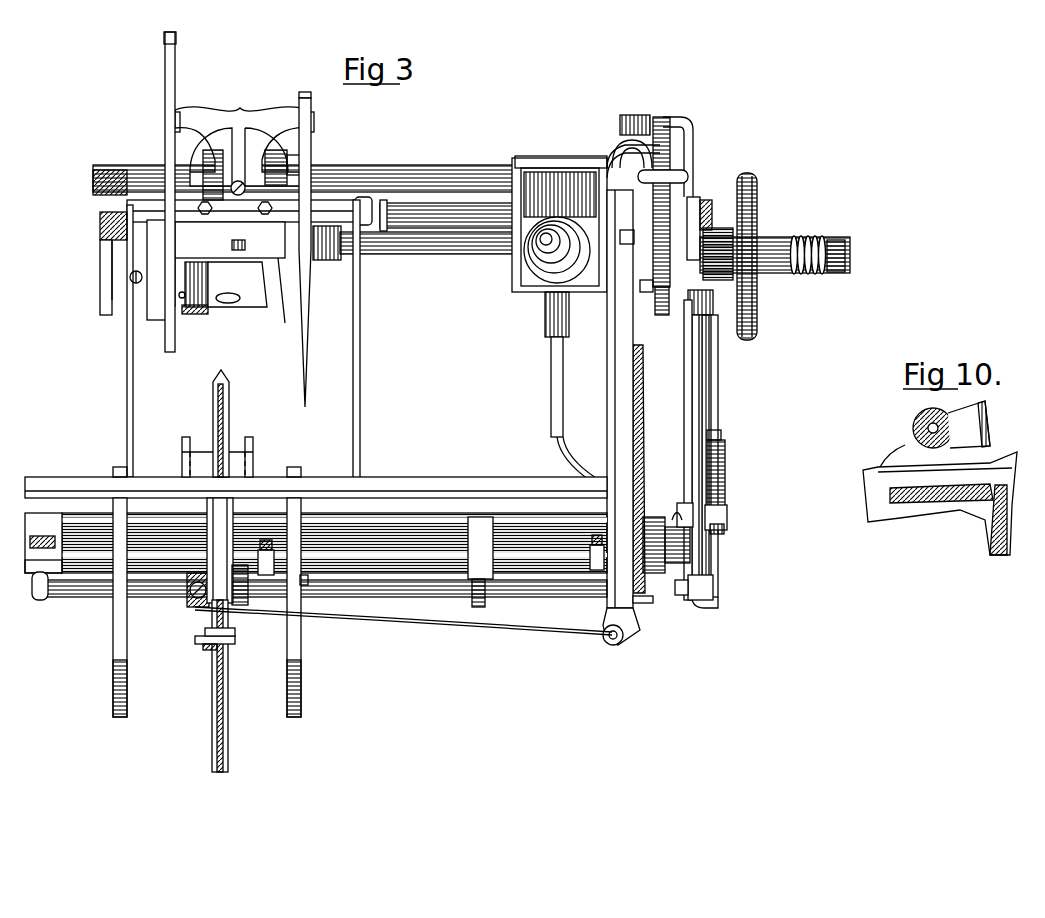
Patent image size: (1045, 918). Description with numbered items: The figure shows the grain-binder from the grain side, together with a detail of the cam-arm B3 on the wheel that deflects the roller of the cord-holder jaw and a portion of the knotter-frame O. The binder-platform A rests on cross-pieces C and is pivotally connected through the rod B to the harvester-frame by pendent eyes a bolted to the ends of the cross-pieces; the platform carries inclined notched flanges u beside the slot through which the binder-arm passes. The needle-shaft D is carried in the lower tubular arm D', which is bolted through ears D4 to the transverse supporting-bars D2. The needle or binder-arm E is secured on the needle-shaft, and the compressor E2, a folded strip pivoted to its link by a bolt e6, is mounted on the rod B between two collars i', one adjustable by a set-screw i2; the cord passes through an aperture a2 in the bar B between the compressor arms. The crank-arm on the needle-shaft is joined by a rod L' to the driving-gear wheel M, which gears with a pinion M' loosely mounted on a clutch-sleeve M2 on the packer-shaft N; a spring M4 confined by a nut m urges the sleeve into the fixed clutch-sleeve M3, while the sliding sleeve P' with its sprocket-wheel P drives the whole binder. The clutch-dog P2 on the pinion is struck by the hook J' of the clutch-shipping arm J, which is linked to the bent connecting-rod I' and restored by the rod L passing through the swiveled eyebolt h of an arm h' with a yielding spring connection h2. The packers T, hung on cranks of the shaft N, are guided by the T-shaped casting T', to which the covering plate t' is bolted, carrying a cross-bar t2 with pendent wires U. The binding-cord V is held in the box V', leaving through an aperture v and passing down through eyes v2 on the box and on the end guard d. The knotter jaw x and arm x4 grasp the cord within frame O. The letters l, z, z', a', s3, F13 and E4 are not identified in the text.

In FIG. 3, the cross-bar t2 is at (328, 205).
In FIG. 3, the upper overhanging plate or covering t' is at (249, 184).
In FIG. 3, the T-shaped head or casting T' is at (221, 219).
In FIG. 3, the hub l is at (212, 182).
In FIG. 3, the packers T is at (321, 249).
In FIG. 3, the pendent flexible arms or stiff wires U is at (110, 341).
In FIG. 3, the block z is at (156, 299).
In FIG. 3, the plate z' is at (199, 320).
In FIG. 3, the radial jaw x is at (237, 295).
In FIG. 3, the arm of knotter rod x4 is at (240, 280).
In FIG. 3, the aperture v is at (361, 322).
In FIG. 3, the packer-shaft N is at (488, 247).
In FIG. 3, the box V' is at (533, 383).
In FIG. 3, the binding-cord V is at (610, 156).
In FIG. 3, the end plate or guard d is at (621, 417).
In FIG. 3, the pulley a' is at (631, 636).
In FIG. 3, the clutch-shipping arm J is at (645, 188).
In FIG. 3, the slotted bent connecting-rod I' is at (615, 137).
In FIG. 3, the hook of clutch trip-arm J' is at (692, 157).
In FIG. 3, the clutch-dog P2 is at (690, 185).
In FIG. 3, the pinion M' is at (709, 228).
In FIG. 3, the clutch-sleeve M2 is at (766, 244).
In FIG. 3, the sprocket-wheel P is at (754, 256).
In FIG. 3, the spring M4 is at (811, 238).
In FIG. 3, the nut m is at (848, 253).
In FIG. 3, the sliding sleeve P' is at (711, 303).
In FIG. 3, the driving-gear wheel M is at (658, 315).
In FIG. 3, the pin s3 is at (643, 299).
In FIG. 3, the clutch-sleeve M3 is at (627, 244).
In FIG. 3, the rod L is at (720, 461).
In FIG. 3, the rod L' is at (680, 450).
In FIG. 3, the collars i' is at (442, 523).
In FIG. 3, the yielding connection h2 is at (722, 466).
In FIG. 3, the swiveled eyebolt h is at (734, 518).
In FIG. 3, the arm h' is at (697, 589).
In FIG. 3, the eyes v2 is at (649, 603).
In FIG. 3, the binder-platform A is at (316, 479).
In FIG. 3, the needle-shaft D is at (334, 543).
In FIG. 3, the cross-pieces C is at (247, 546).
In FIG. 3, the rod B is at (323, 598).
In FIG. 3, the pendent eyes a is at (256, 594).
In FIG. 3, the leg F13 is at (115, 612).
In FIG. 3, the inclined notched flanges u is at (183, 442).
In FIG. 3, the needle or binder-arm E is at (229, 385).
In FIG. 3, the compressor E2 is at (231, 418).
In FIG. 3, the set-screw i2 is at (180, 578).
In FIG. 3, the aperture a2 is at (205, 605).
In FIG. 3, the plate E4 is at (205, 632).
In FIG. 3, the bolt e6 is at (203, 648).
In FIG. 3, the ears or projections D4 is at (258, 548).
In FIG. 3, the lower tubular arm D' is at (328, 595).
In FIG. 3, the transverse supporting-bars D2 is at (268, 607).
In FIG. 10, the cam-arm B3 is at (966, 416).
In FIG. 10, the knotter-supporting frame o is at (904, 443).